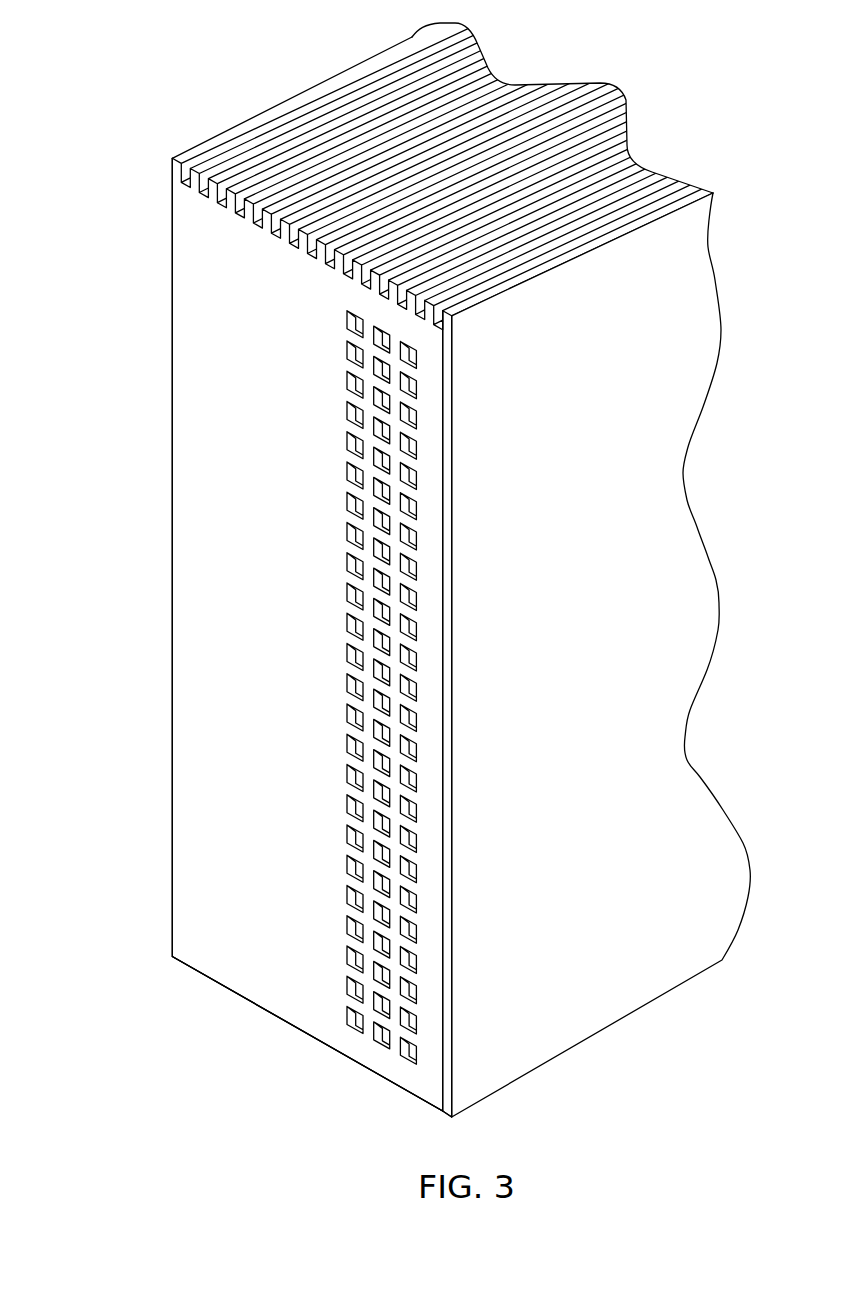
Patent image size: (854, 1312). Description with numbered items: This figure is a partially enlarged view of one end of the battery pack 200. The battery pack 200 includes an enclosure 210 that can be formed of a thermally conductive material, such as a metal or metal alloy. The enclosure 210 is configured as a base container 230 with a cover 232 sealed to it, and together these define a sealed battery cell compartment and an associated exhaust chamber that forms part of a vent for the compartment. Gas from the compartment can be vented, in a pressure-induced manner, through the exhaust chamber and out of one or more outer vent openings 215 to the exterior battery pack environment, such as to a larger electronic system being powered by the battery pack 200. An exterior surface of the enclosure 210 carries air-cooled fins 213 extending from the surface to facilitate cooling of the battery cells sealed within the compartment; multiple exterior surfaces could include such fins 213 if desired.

The battery pack 200 is at (90, 370).
The enclosure 210 is at (582, 650).
The air-cooled fins 213 is at (257, 125).
The outer vent openings 215 is at (382, 1043).
The base container 230 is at (407, 1077).
The cover 232 is at (443, 1111).